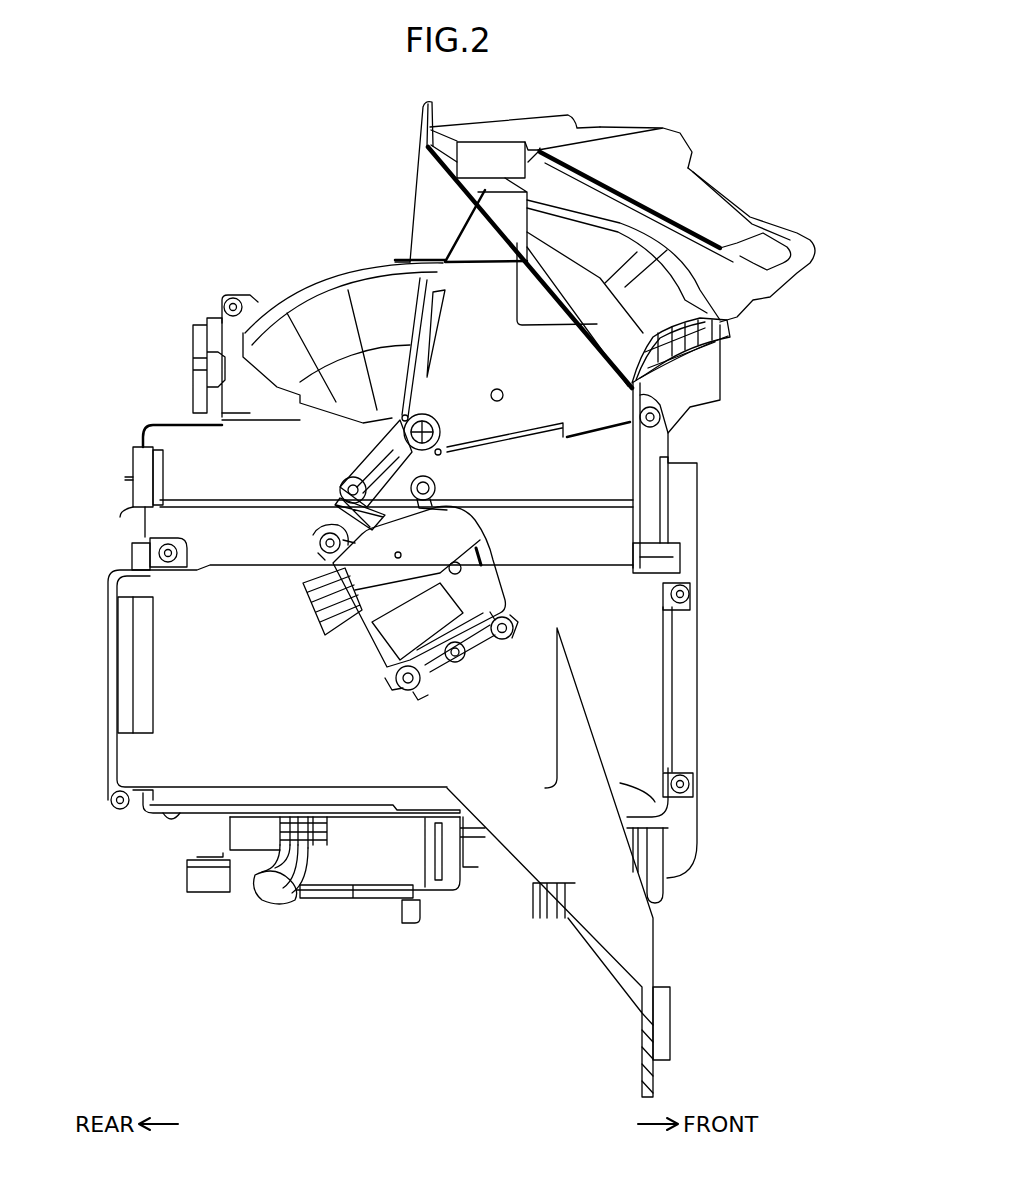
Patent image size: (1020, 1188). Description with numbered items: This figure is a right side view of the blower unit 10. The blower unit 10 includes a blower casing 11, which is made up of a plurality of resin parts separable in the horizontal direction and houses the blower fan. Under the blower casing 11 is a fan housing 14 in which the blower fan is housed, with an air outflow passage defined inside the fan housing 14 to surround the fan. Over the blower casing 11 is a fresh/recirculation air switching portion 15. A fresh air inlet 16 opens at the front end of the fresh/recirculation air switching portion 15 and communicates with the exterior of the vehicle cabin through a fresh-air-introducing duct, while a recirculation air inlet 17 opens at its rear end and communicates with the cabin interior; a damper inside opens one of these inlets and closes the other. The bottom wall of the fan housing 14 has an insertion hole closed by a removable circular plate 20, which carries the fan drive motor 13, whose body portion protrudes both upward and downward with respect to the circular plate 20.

The blower unit 10 is at (329, 172).
The blower casing 11 is at (638, 661).
The fan drive motor 13 is at (379, 853).
The fan housing 14 is at (173, 748).
The fresh/recirculation air switching portion 15 is at (496, 205).
The fresh air inlet 16 is at (725, 245).
The recirculation air inlet 17 is at (315, 340).
The circular plate 20 is at (202, 813).